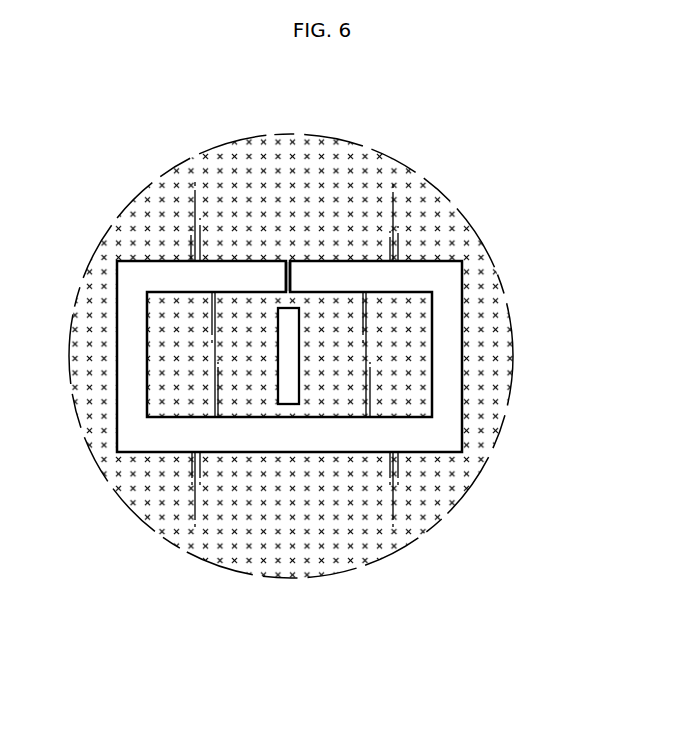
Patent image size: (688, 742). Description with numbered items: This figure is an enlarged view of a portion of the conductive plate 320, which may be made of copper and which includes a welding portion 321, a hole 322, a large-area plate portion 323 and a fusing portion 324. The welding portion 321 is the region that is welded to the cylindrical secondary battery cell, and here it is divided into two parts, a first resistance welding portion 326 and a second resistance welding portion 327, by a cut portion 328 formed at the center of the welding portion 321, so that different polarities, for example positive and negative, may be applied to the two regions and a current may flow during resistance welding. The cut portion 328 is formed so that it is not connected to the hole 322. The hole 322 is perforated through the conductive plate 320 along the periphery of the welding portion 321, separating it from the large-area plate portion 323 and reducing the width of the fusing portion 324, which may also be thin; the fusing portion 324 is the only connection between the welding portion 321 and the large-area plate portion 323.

The conductive plate 320 is at (466, 133).
The welding portion 321 is at (203, 627).
The hole 322 is at (445, 318).
The large-area plate portion 323 is at (330, 171).
The fusing portion 324 is at (286, 276).
The first resistance welding portion 326 is at (183, 400).
The second resistance welding portion 327 is at (390, 400).
The cut portion 328 is at (289, 370).